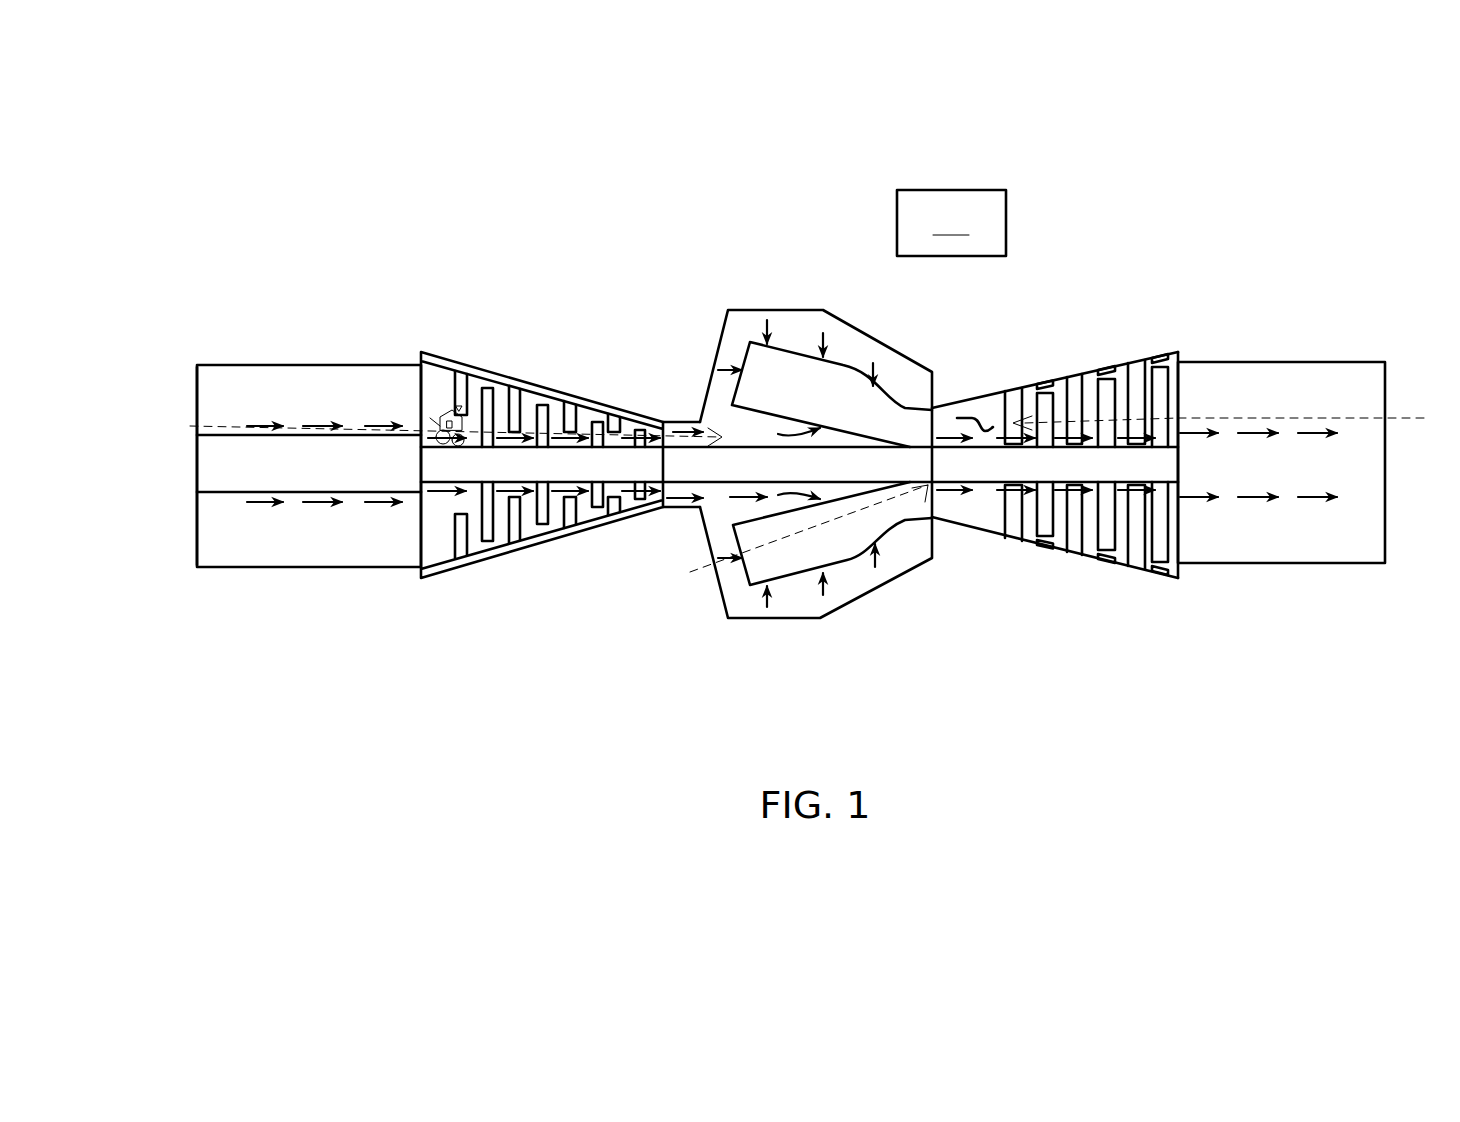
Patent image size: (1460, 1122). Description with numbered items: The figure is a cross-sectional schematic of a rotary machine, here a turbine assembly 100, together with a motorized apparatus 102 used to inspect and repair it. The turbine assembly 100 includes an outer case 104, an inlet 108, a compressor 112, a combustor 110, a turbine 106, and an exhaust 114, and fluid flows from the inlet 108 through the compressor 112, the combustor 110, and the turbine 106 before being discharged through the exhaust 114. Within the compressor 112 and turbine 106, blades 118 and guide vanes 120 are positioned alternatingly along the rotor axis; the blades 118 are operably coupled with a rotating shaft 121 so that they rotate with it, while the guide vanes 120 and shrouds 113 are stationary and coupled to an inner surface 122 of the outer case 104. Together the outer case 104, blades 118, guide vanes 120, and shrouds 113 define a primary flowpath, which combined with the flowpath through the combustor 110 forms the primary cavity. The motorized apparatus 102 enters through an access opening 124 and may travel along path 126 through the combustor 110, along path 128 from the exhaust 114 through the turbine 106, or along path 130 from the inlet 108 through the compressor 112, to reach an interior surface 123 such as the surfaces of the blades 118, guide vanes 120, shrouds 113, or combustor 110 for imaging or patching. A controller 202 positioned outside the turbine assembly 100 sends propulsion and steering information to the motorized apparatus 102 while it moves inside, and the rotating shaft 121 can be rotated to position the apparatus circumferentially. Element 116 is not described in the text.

The turbine assembly 100 is at (1126, 238).
The motorized apparatus 102 is at (428, 388).
The outer case 104 is at (1160, 352).
The turbine 106 is at (1072, 578).
The inlet 108 is at (173, 547).
The combustor 110 is at (776, 628).
The compressor 112 is at (478, 580).
The shrouds 113 is at (1045, 545).
The exhaust 114 is at (1410, 528).
The hot gas flow path 116 is at (973, 420).
The blades 118 is at (473, 395).
The guide vanes 120 is at (452, 384).
The rotating shaft 121 is at (440, 463).
The inner surface 122 is at (963, 408).
The interior surface 123 is at (613, 503).
The opening 124 is at (197, 376).
The path 126 is at (827, 527).
The path 128 is at (1408, 418).
The path 130 is at (222, 427).
The controller 202 is at (951, 223).